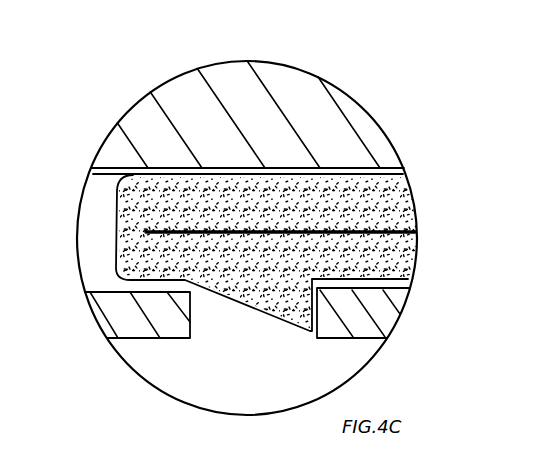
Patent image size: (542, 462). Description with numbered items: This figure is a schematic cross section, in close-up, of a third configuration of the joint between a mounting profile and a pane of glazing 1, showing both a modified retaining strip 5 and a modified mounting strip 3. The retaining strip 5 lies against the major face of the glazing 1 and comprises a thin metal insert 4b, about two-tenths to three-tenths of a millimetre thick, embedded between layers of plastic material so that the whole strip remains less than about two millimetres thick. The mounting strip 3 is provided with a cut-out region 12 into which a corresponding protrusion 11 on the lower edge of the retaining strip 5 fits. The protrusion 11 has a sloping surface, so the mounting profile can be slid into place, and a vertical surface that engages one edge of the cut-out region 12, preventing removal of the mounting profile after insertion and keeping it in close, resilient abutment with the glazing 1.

The glazing 1 is at (226, 77).
The retaining strip 5 is at (132, 204).
The metal insert 4b is at (375, 232).
The mounting strip 3 is at (110, 331).
The cut-out region 12 is at (222, 337).
The protrusion 11 is at (300, 325).